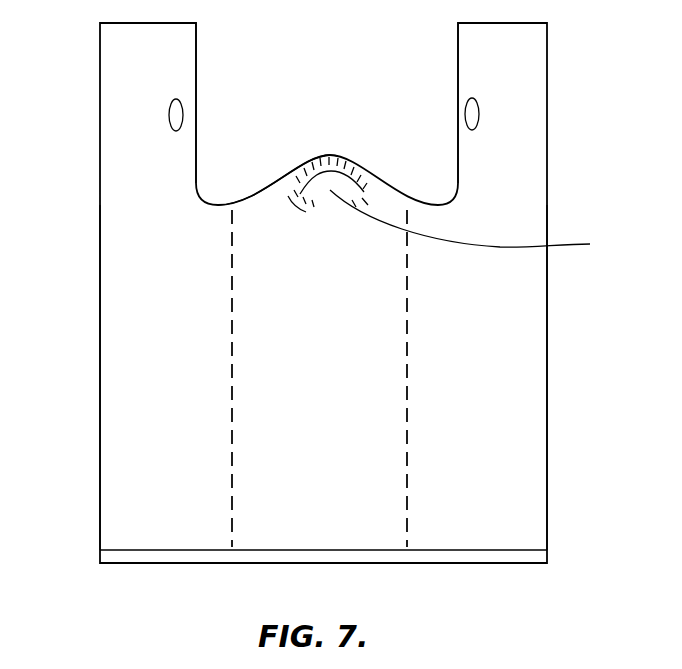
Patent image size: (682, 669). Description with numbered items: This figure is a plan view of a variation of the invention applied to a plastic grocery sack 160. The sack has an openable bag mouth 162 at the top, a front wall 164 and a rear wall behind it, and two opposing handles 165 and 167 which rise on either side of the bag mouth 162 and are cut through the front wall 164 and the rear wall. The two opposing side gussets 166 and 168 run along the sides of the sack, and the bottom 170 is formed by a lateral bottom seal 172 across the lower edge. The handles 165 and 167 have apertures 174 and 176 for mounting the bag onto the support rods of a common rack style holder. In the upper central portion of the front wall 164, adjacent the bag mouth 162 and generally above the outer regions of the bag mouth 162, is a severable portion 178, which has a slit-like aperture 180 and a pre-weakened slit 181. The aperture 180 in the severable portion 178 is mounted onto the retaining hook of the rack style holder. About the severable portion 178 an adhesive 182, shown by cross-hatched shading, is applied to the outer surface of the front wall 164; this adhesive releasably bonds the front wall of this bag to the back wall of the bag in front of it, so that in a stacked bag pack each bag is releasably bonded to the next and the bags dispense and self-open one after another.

The plastic grocery sack 160 is at (548, 217).
The openable bag mouth 162 is at (241, 203).
The front wall 164 is at (343, 360).
The handle 165 is at (122, 83).
The side gusset 166 is at (138, 315).
The handle 167 is at (507, 80).
The side gusset 168 is at (507, 345).
The bottom 170 is at (283, 563).
The lateral bottom seal 172 is at (370, 551).
The aperture 174 is at (168, 118).
The aperture 176 is at (478, 118).
The severable portion 178 is at (346, 160).
The slit-like aperture 180 is at (314, 158).
The pre-weakened slit 181 is at (338, 158).
The adhesive 182 is at (482, 225).